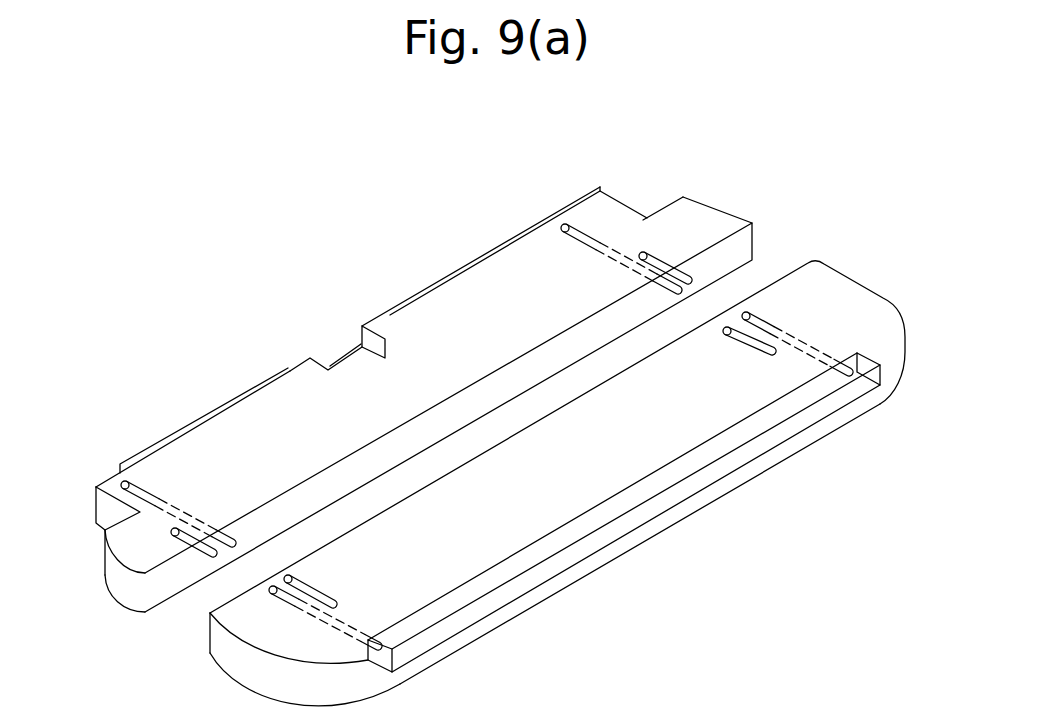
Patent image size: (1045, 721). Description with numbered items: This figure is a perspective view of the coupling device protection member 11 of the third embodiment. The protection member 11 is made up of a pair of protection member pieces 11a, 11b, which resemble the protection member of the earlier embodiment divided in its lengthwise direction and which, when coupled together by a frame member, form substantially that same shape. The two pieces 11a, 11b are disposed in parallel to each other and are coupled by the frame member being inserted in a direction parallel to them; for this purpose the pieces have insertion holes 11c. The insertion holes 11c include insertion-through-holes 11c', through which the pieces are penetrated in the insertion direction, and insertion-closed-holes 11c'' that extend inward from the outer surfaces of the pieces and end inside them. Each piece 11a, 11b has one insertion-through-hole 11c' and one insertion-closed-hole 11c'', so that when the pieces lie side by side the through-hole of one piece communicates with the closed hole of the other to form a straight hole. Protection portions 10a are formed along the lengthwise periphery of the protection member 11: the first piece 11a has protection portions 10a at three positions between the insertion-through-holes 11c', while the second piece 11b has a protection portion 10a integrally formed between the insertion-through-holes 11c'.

The protection portion 10a is at (204, 405).
The protection member 11 is at (894, 153).
The first protection member piece 11a is at (692, 221).
The second protection member piece 11b is at (798, 283).
The insertion holes 11c is at (477, 423).
The insertion-through-hole 11c' is at (505, 468).
The insertion-closed-hole 11c'' is at (435, 392).